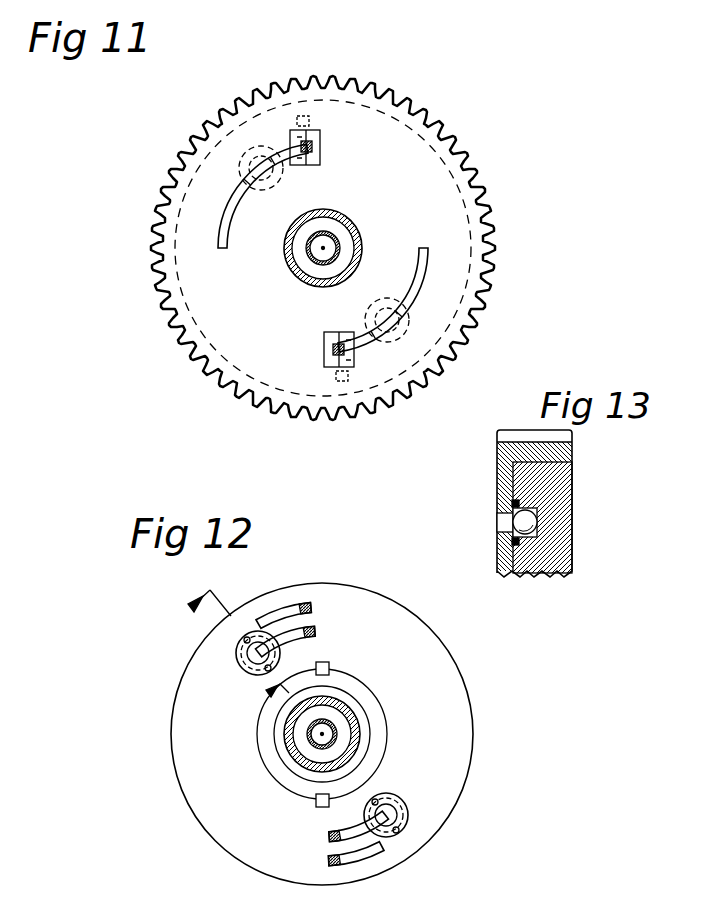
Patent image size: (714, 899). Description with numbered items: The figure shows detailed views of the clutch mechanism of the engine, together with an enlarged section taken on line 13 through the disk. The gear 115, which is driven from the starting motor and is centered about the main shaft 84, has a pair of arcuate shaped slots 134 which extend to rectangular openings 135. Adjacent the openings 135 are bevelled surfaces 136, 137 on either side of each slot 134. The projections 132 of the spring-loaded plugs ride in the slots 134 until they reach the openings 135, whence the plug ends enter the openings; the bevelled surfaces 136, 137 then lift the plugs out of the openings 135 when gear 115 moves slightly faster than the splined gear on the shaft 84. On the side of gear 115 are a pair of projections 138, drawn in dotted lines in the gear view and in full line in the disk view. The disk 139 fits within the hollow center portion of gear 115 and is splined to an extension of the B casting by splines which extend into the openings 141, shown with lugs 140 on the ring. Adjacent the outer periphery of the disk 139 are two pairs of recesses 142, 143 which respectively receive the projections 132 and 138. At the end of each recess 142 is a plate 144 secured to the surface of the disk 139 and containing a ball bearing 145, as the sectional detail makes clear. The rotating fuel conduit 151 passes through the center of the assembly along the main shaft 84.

In FIG. 12, the section line 13 is at (223, 650).
In FIG. 11, the main shaft 84 is at (340, 202).
In FIG. 12, the main shaft 84 is at (358, 722).
In FIG. 11, the gear 115 is at (205, 166).
In FIG. 13, the gear 115 is at (572, 455).
In FIG. 11, the coil spring 132 is at (316, 164).
In FIG. 12, the coil spring 132 is at (329, 838).
In FIG. 11, the arcuate shaped slots 134 is at (224, 222).
In FIG. 13, the arcuate shaped slots 134 is at (497, 522).
In FIG. 11, the rectangular openings 135 is at (328, 333).
In FIG. 11, the bevelled surface 136 is at (341, 343).
In FIG. 11, the bevelled surface 137 is at (354, 352).
In FIG. 11, the projections 138 is at (310, 119).
In FIG. 12, the projections 138 is at (311, 603).
In FIG. 12, the disk 139 is at (425, 628).
In FIG. 13, the disk 139 is at (572, 490).
In FIG. 12, the lug 140 is at (326, 662).
In FIG. 12, the openings 141 is at (330, 668).
In FIG. 12, the recesses 142 is at (313, 627).
In FIG. 13, the recesses 142 is at (497, 516).
In FIG. 12, the recesses 143 is at (300, 578).
In FIG. 11, the plate 144 is at (404, 306).
In FIG. 12, the plate 144 is at (244, 670).
In FIG. 13, the plate 144 is at (505, 540).
In FIG. 11, the ball bearing 145 is at (405, 325).
In FIG. 12, the ball bearing 145 is at (408, 808).
In FIG. 13, the ball bearing 145 is at (537, 522).
In FIG. 11, the rotating conduit 151 is at (339, 243).
In FIG. 12, the rotating conduit 151 is at (307, 738).